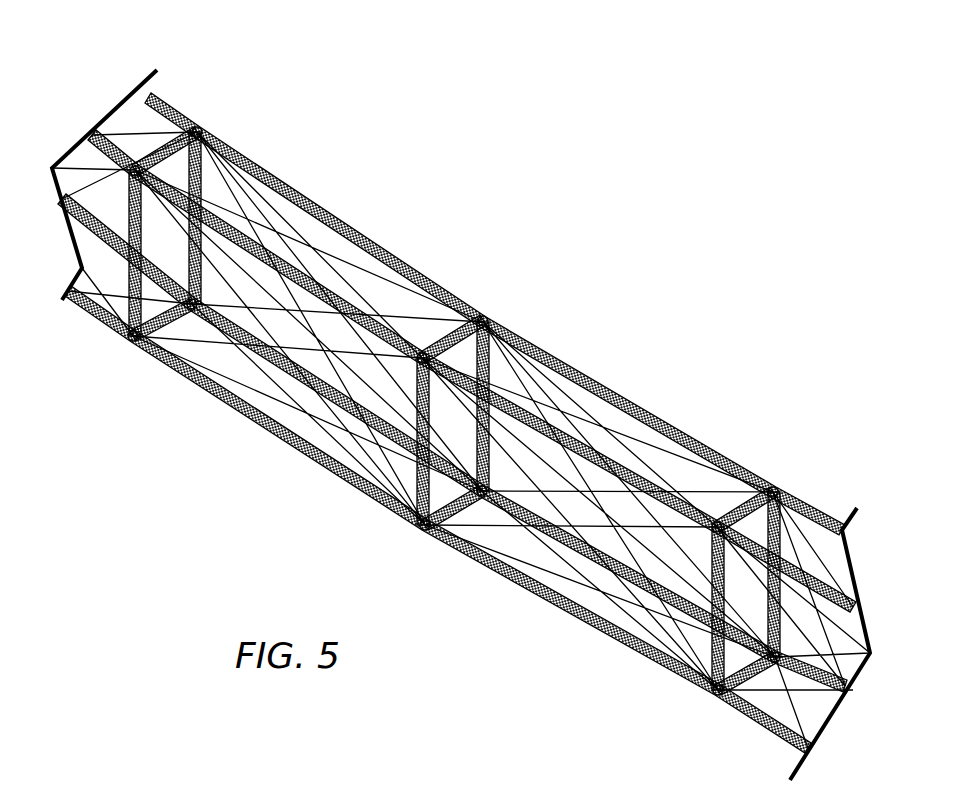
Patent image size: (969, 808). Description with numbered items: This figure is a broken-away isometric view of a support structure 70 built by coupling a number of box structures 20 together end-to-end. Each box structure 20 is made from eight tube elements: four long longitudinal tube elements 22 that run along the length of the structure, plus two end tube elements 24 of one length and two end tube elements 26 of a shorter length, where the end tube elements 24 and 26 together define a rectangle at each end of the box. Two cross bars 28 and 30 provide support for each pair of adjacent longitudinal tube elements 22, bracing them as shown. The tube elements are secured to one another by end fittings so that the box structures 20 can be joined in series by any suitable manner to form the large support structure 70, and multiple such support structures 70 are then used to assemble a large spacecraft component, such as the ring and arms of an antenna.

The support structure 70 is at (498, 146).
The box structure 20 is at (430, 262).
The longitudinal tube element 22 is at (267, 171).
The end tube element 24 is at (128, 290).
The end tube element 26 is at (172, 148).
The cross bar 28 is at (437, 291).
The cross bar 30 is at (283, 222).